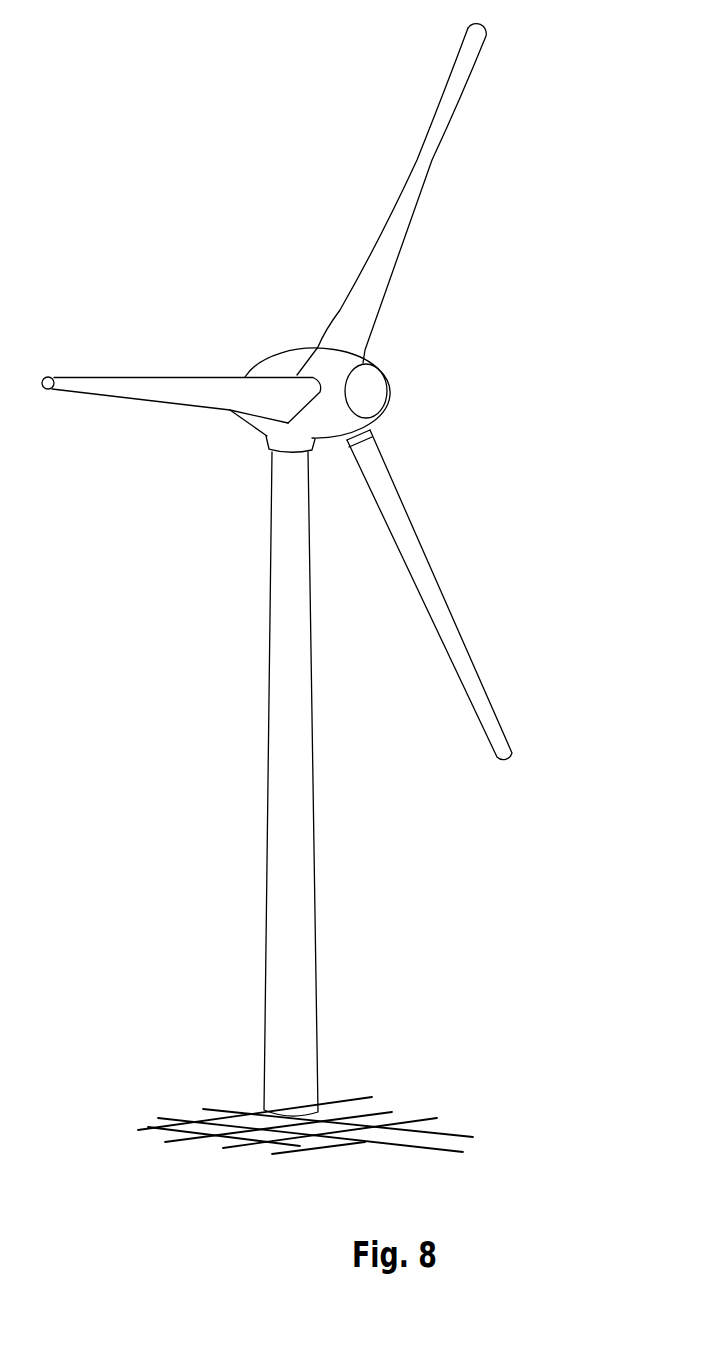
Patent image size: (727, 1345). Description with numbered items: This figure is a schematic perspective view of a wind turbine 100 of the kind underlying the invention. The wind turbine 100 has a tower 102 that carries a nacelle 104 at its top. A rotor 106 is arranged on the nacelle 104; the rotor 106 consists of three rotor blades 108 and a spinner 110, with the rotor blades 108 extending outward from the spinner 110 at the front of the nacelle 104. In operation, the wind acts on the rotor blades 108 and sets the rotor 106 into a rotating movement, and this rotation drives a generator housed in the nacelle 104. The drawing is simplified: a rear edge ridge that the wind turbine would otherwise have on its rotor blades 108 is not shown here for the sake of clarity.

The wind turbine 100 is at (224, 522).
The tower 102 is at (298, 884).
The nacelle 104 is at (285, 366).
The rotor 106 is at (461, 309).
The rotor blades 108 is at (433, 148).
The spinner 110 is at (377, 390).